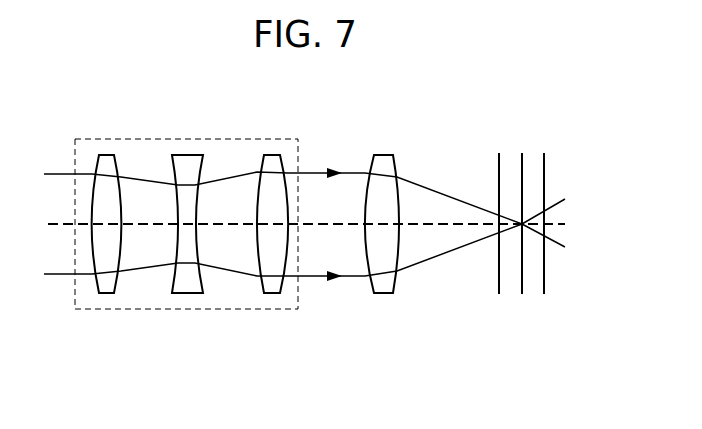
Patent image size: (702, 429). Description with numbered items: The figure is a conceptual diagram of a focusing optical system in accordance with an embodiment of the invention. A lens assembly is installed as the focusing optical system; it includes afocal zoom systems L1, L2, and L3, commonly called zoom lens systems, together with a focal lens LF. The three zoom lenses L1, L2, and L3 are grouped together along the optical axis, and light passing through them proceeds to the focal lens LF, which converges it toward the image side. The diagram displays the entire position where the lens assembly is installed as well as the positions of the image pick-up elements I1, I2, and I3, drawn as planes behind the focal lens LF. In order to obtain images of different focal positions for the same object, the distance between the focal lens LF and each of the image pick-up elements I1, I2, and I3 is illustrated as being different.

The afocal zoom system L1 is at (108, 198).
The afocal zoom system L2 is at (189, 198).
The afocal zoom system L3 is at (274, 198).
The focal lens LF is at (382, 198).
The image pick-up element I1 is at (495, 241).
The image pick-up element I2 is at (523, 241).
The image pick-up element I3 is at (551, 241).